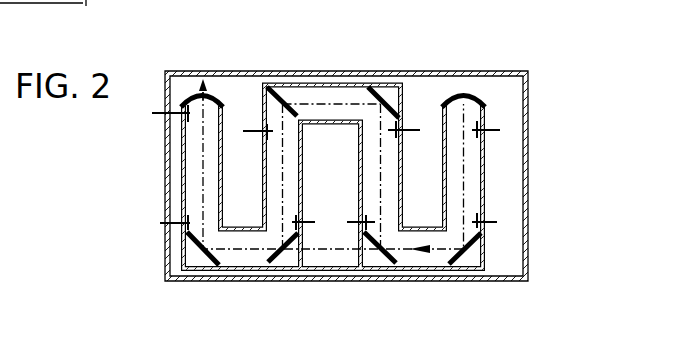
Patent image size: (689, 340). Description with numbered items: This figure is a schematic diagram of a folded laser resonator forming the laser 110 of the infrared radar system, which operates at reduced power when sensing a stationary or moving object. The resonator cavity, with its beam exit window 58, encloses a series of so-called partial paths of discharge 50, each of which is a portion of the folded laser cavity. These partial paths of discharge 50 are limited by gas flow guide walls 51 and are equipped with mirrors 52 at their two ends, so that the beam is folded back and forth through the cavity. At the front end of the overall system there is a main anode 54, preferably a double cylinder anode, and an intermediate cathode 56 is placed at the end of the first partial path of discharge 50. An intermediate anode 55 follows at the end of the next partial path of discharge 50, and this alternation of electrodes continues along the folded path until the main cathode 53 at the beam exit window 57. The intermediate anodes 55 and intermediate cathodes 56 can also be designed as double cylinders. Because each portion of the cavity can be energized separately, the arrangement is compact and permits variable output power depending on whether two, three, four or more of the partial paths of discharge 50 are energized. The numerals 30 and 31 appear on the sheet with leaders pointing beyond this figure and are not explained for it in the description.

The laser 110 is at (163, 252).
The partial path of discharge 50 is at (193, 187).
The gas flow guide wall 51 is at (181, 157).
The mirror 52 is at (190, 98).
The main cathode 53 is at (160, 114).
The main anode 54 is at (500, 128).
The intermediate anode 55 is at (168, 225).
The intermediate cathode 56 is at (497, 222).
The beam exit window 57 is at (208, 95).
The beam exit window 58 is at (203, 88).
The housing 30 is at (394, 0).
The wall 31 is at (314, 0).